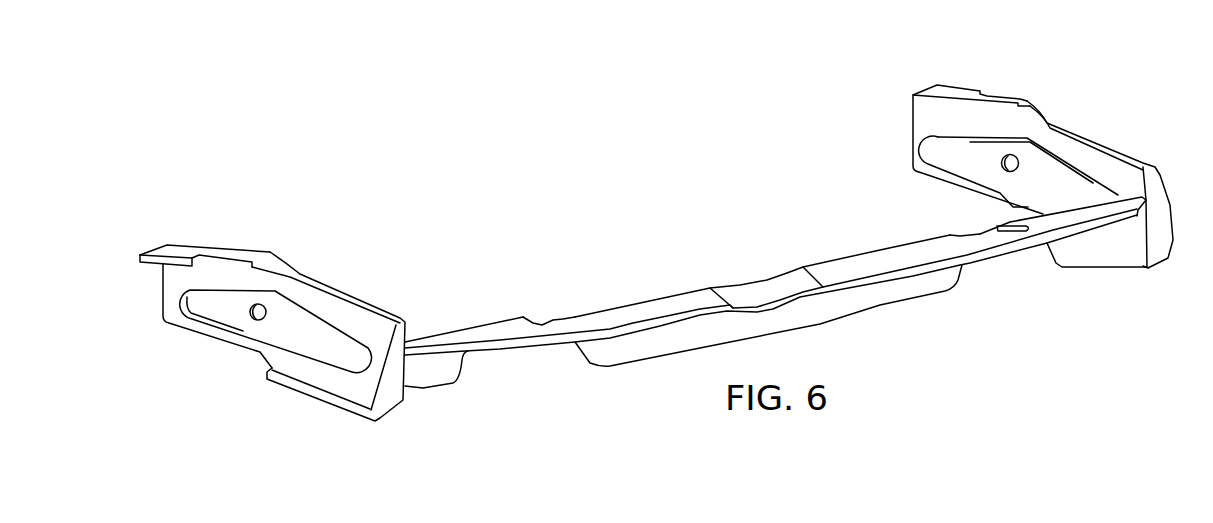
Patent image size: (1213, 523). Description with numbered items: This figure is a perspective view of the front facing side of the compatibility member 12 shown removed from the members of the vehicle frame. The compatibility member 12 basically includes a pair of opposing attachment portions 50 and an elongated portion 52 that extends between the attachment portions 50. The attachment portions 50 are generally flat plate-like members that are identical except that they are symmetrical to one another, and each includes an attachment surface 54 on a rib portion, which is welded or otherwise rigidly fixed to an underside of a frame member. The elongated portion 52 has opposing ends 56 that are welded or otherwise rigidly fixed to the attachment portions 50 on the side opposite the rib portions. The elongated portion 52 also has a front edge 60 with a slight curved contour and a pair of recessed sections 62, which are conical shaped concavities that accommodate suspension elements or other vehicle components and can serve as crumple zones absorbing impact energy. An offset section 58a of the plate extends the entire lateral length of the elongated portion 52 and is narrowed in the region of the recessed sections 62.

The compatibility member 12 is at (549, 146).
The attachment portion 50 is at (320, 375).
The elongated portion 52 is at (858, 298).
The attachment surface 54 is at (185, 250).
The opposing end 56 is at (1123, 233).
The offset section 58a is at (847, 268).
The front edge 60 is at (913, 270).
The recessed section 62 is at (542, 323).